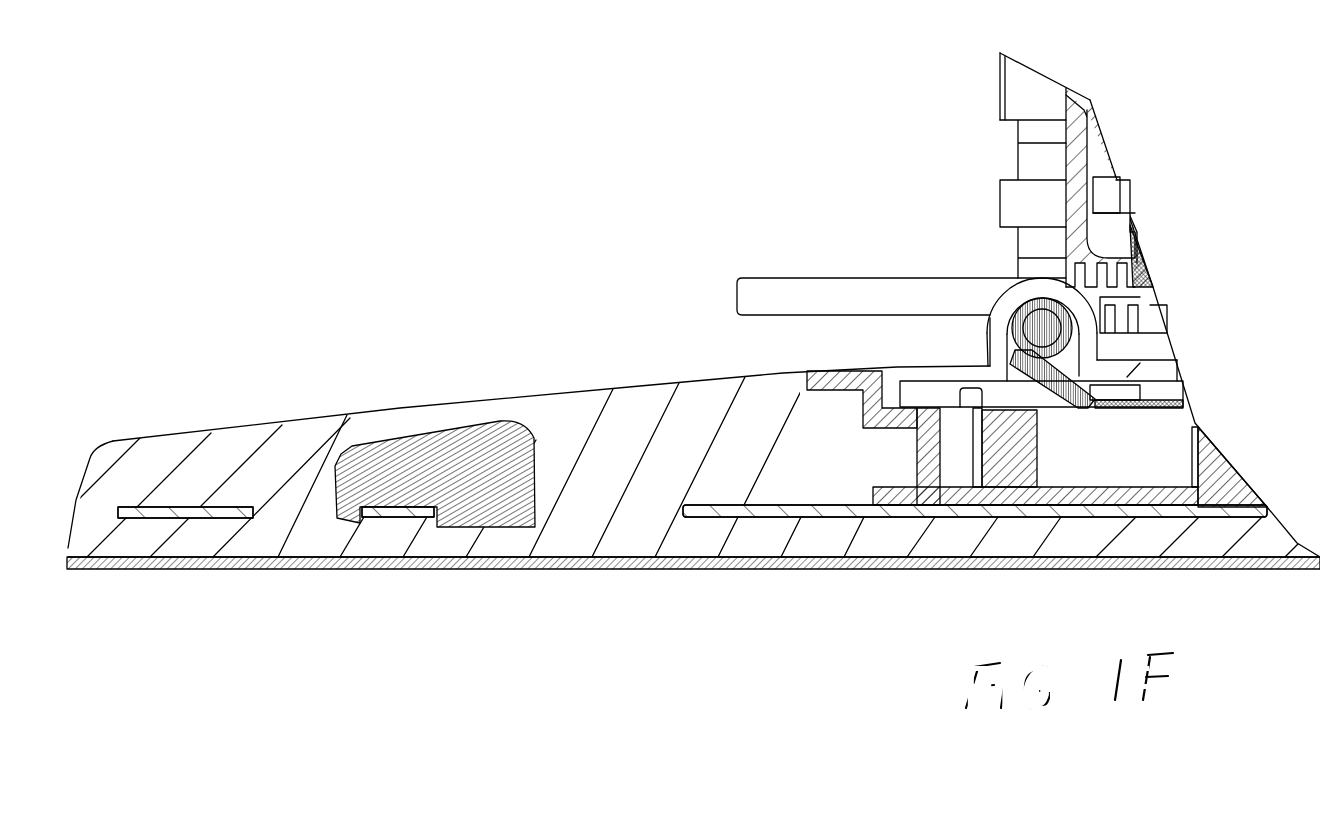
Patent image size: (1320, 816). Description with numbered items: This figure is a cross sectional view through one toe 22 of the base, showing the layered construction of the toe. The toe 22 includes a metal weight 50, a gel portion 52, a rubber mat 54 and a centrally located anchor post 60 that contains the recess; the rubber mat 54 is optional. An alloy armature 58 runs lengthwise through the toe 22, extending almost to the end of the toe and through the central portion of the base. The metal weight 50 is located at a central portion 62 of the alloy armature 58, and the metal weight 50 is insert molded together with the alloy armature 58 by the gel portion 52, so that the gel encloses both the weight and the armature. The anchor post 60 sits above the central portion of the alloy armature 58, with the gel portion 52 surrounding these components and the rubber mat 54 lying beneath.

The toe 22 is at (645, 405).
The metal weight 50 is at (447, 450).
The gel portion 52 is at (287, 452).
The rubber mat 54 is at (693, 624).
The alloy armature 58 is at (907, 507).
The anchor post 60 is at (1175, 493).
The central portion of the alloy armature 62 is at (403, 507).